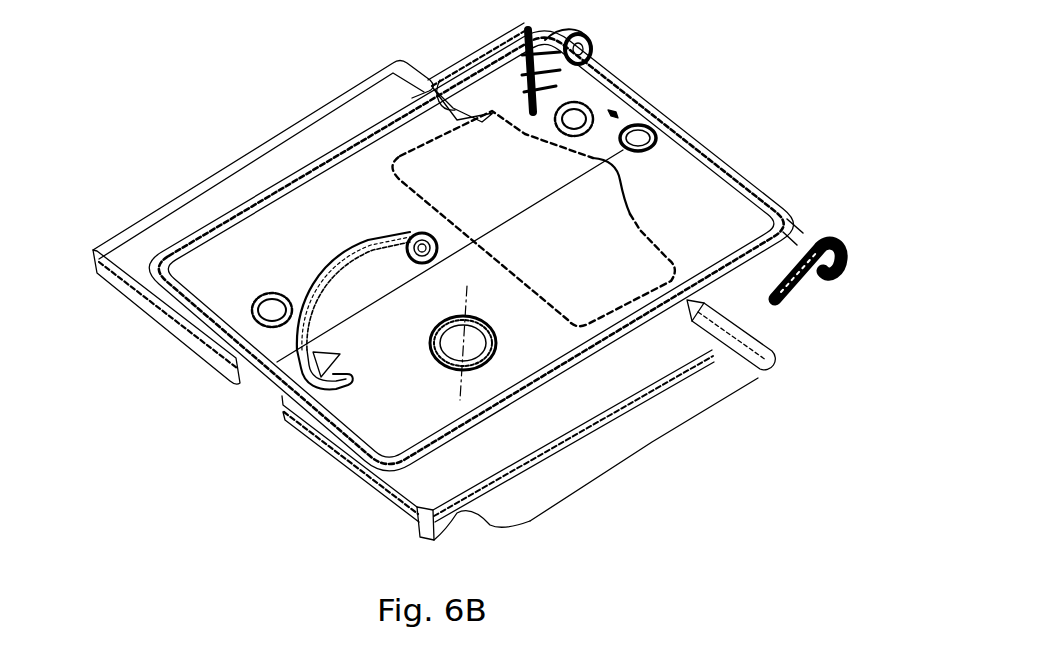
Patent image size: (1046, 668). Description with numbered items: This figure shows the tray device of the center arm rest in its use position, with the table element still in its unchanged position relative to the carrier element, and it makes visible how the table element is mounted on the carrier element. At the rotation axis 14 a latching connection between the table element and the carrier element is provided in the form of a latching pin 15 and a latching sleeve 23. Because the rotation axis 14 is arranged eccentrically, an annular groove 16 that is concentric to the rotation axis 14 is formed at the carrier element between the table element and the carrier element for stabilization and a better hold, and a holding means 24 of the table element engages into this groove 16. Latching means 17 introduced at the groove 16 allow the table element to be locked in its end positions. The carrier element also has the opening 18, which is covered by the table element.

The rotation axis 14 is at (457, 391).
The latching pin 15 is at (603, 414).
The latching sleeve 23 is at (500, 341).
The annular groove 16 is at (317, 277).
The latching means 17 is at (318, 386).
The opening 18 is at (614, 188).
The holding means 24 is at (360, 255).